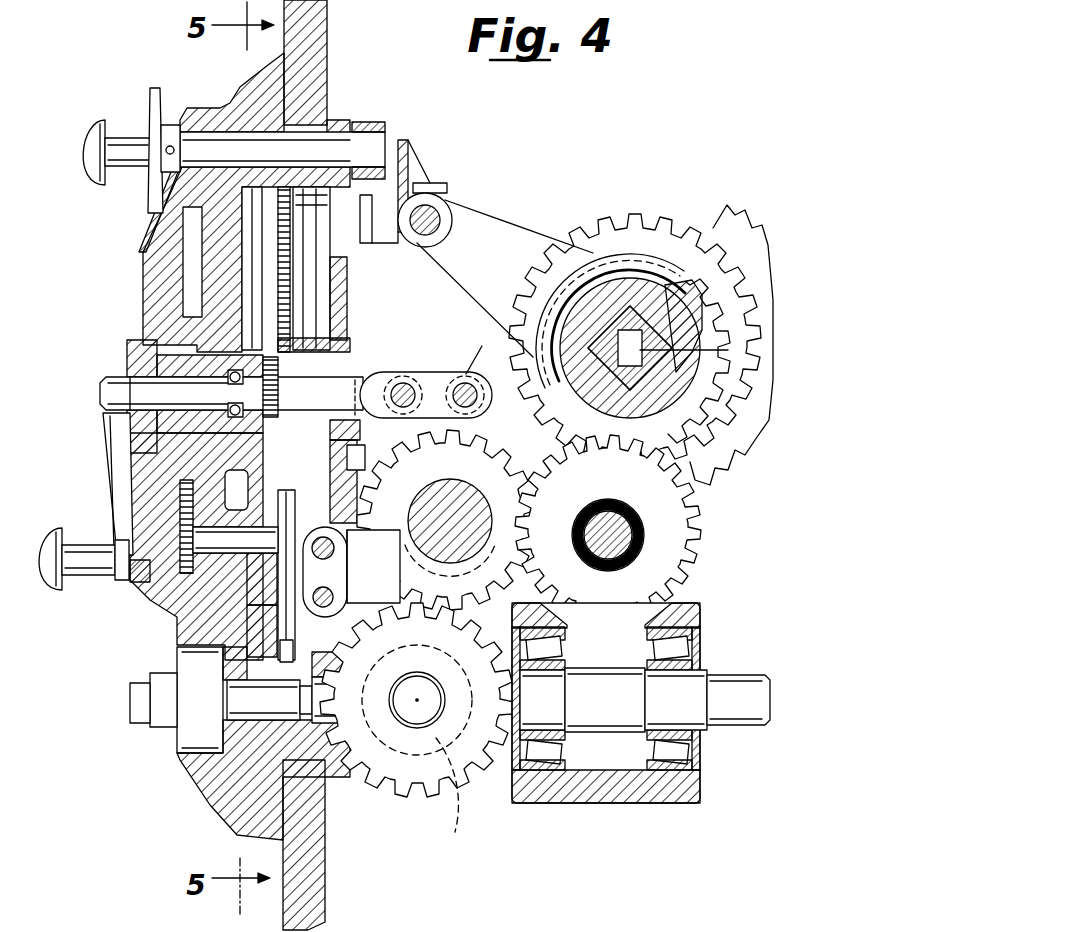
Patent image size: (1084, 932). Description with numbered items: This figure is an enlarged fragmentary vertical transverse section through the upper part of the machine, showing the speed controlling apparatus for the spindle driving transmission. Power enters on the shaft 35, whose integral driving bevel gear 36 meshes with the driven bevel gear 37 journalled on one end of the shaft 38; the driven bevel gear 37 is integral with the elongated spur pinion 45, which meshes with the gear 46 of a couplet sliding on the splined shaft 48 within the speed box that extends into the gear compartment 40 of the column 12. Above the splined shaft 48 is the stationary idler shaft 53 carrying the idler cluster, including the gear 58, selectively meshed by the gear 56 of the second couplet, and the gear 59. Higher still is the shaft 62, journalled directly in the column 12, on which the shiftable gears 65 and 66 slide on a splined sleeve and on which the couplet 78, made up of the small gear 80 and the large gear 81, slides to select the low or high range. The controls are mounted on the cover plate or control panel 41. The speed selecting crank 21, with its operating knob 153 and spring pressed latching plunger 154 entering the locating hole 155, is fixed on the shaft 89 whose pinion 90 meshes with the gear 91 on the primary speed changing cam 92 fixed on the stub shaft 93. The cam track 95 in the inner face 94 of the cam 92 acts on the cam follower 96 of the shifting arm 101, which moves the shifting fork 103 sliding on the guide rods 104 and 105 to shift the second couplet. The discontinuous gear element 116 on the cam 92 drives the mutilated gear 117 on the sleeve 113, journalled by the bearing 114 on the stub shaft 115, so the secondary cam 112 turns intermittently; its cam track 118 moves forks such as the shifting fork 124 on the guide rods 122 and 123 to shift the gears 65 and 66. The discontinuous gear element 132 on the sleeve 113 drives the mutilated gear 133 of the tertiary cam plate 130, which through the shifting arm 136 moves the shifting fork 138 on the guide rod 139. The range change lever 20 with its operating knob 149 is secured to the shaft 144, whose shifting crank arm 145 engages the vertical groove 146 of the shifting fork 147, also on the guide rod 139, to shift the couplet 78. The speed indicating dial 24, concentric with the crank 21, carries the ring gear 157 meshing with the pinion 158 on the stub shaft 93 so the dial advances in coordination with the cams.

The column 12 is at (305, 907).
The range change lever 20 is at (130, 140).
The speed selecting crank 21 is at (110, 495).
The speed indicating dial 24 is at (165, 215).
The shaft 35 is at (598, 718).
The driving bevel gear 36 is at (497, 766).
The driven bevel gear 37 is at (486, 802).
The shaft 38 is at (418, 698).
The gear compartment 40 is at (326, 779).
The cover plate or control panel 41 is at (207, 778).
The elongated spur pinion 45 is at (414, 808).
The gear 46 is at (392, 456).
The splined shaft 48 is at (450, 580).
The idler shaft 53 is at (612, 510).
The gear 56 is at (485, 463).
The gear 58 is at (706, 530).
The gear 59 is at (660, 553).
The shaft 62 is at (722, 354).
The shiftable gear 65 is at (645, 255).
The shiftable gear 66 is at (590, 215).
The couplet 78 is at (685, 168).
The small gear 80 is at (712, 306).
The large gear 81 is at (733, 207).
The shaft 89 is at (112, 395).
The pinion 90 is at (283, 388).
The gear 91 is at (272, 677).
The primary speed changing cam 92 is at (258, 604).
The stub shaft 93 is at (250, 582).
The inner face 94 is at (362, 668).
The cam track 95 is at (294, 628).
The cam follower 96 is at (287, 490).
The shifting arm 101 is at (310, 590).
The shifting fork 103 is at (332, 510).
The guide rod 104 is at (340, 547).
The guide rod 105 is at (345, 597).
The secondary cam 112 is at (352, 304).
The sleeve 113 is at (358, 366).
The bearing 114 is at (357, 437).
The stub shaft 115 is at (390, 390).
The discontinuous gear element 116 is at (241, 470).
The mutilated gear 117 is at (235, 393).
The cam track 118 is at (430, 500).
The guide rod 122 is at (428, 382).
The guide rod 123 is at (479, 396).
The shifting fork 124 is at (475, 350).
The tertiary cam plate 130 is at (315, 200).
The discontinuous gear element 132 is at (290, 322).
The mutilated gear 133 is at (283, 218).
The shifting arm 136 is at (338, 232).
The shifting fork 138 is at (366, 246).
The guide rod 139 is at (440, 214).
The shaft 144 is at (215, 150).
The shifting crank arm 145 is at (366, 124).
The vertical groove 146 is at (410, 156).
The shifting fork 147 is at (498, 238).
The operating knob 149 is at (88, 150).
The operating knob 153 is at (46, 590).
The spring pressed latching plunger 154 is at (110, 577).
The locating hole 155 is at (172, 580).
The ring gear 157 is at (168, 252).
The pinion 158 is at (200, 540).